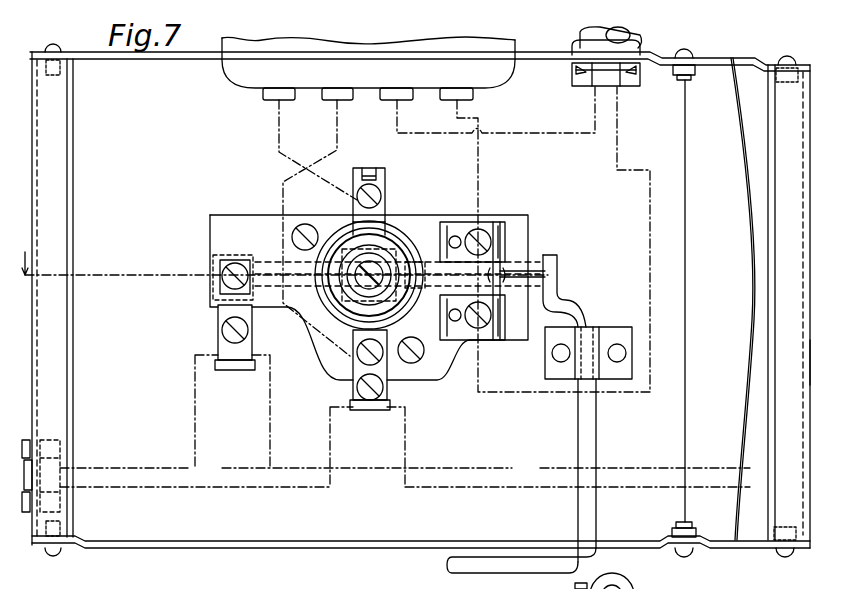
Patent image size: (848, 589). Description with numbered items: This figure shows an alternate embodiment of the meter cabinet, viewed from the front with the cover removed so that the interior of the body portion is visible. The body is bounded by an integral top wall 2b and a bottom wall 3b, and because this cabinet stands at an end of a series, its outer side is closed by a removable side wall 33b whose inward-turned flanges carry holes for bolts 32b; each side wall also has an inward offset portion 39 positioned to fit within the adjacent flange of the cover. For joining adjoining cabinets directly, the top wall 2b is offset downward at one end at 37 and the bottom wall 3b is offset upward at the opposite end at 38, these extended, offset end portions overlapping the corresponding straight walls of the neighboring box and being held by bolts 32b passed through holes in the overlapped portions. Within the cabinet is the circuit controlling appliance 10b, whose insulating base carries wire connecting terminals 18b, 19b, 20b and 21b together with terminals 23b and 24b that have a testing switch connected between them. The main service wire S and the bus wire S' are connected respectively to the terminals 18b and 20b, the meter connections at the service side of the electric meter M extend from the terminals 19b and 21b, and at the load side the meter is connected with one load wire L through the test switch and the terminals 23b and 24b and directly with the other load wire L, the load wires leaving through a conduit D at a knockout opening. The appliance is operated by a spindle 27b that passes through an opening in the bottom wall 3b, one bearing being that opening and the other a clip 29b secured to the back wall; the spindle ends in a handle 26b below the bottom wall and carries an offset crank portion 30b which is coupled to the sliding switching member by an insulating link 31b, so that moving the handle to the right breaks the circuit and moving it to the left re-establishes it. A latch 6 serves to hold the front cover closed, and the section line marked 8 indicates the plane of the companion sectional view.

The top wall 2b is at (178, 60).
The bottom wall 3b is at (416, 538).
The removable side wall 33b is at (60, 182).
The inward offset portion 39 is at (70, 256).
The bolt 32b is at (64, 42).
The upward offset portion of bottom wall 38 is at (668, 532).
The downward offset portion of top wall 37 is at (716, 66).
The electric meter M is at (238, 84).
The conduit D is at (632, 46).
The load wire L is at (606, 140).
The circuit controlling appliance 10b is at (210, 221).
The latch 6 is at (487, 405).
The wire connecting terminal 19b is at (384, 208).
The wire terminal 23b is at (472, 226).
The wire terminal 24b is at (476, 330).
The link 31b is at (556, 276).
The offset crank portion 30b is at (548, 256).
The clip 29b is at (616, 332).
The spindle 27b is at (594, 428).
The handle 26b is at (534, 570).
The wire connecting terminal 18b is at (222, 328).
The wire connecting terminal 21b is at (358, 354).
The wire connecting terminal 20b is at (382, 386).
The main service wire S is at (405, 421).
The bus wire S' is at (527, 456).
The section line 8 is at (414, 312).